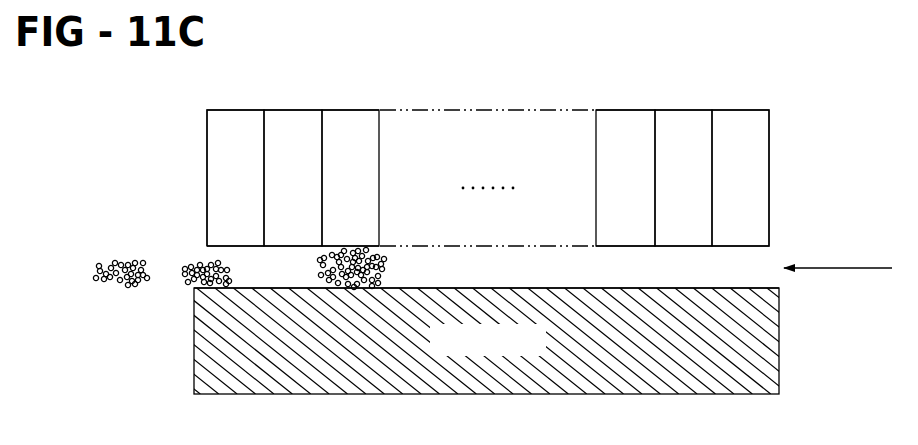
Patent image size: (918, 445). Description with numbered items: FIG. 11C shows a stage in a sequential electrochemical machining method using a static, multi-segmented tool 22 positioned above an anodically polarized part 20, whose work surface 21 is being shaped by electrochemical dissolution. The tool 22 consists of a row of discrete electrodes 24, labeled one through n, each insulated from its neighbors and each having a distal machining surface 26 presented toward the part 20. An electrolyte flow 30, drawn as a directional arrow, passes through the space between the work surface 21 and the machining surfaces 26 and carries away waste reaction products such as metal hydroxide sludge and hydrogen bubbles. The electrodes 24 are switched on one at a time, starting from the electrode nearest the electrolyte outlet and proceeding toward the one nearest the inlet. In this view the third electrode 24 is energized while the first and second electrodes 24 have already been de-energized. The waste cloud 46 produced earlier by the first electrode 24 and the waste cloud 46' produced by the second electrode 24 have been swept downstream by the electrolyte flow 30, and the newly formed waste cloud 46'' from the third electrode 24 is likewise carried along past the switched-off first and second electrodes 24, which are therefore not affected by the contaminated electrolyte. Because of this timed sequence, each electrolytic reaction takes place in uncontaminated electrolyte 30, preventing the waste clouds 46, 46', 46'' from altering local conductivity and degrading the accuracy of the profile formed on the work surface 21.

The part 20 is at (784, 365).
The work surface 21 is at (715, 287).
The multi-segmented tool 22 is at (515, 107).
The electrodes 24 is at (231, 125).
The machining surface 26 is at (728, 247).
The electrolyte flow 30 is at (860, 269).
The waste cloud 46 is at (99, 254).
The waste cloud 46' is at (186, 253).
The waste cloud 46'' is at (318, 268).